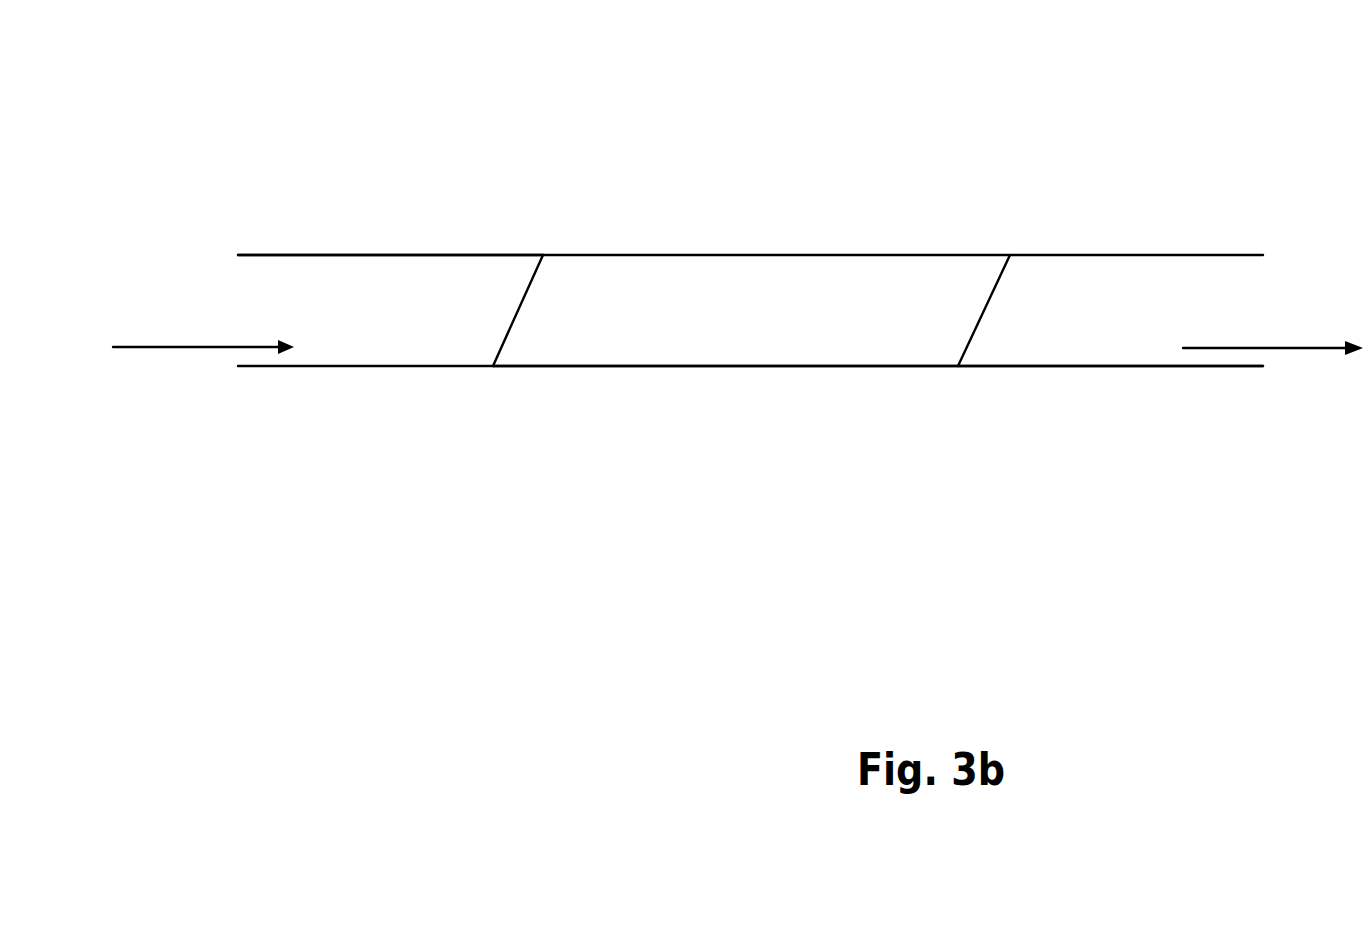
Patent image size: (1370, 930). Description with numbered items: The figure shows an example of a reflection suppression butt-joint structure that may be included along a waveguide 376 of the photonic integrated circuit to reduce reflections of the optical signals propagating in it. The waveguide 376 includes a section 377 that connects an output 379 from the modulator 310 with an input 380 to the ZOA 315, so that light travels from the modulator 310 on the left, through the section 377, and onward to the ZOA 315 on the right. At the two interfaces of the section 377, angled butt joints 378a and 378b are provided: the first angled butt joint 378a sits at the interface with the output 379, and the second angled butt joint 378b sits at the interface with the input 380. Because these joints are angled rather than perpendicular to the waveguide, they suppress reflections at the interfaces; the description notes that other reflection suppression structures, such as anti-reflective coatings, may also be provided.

The waveguide 376 is at (390, 604).
The section 377 is at (813, 347).
The angled butt joint 378a is at (535, 270).
The angled butt joint 378b is at (992, 296).
The output 379 is at (400, 292).
The input 380 is at (1118, 293).
The modulator 310 is at (182, 315).
The ZOA 315 is at (1273, 315).